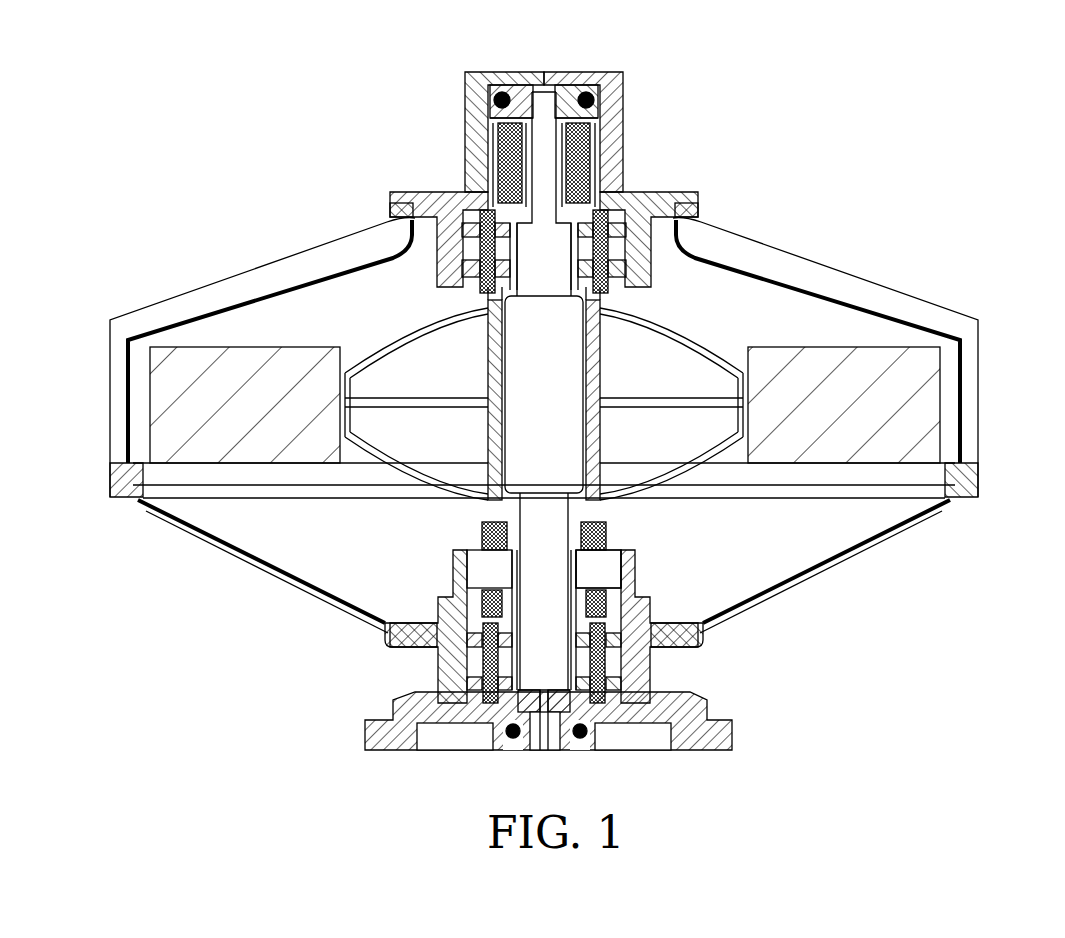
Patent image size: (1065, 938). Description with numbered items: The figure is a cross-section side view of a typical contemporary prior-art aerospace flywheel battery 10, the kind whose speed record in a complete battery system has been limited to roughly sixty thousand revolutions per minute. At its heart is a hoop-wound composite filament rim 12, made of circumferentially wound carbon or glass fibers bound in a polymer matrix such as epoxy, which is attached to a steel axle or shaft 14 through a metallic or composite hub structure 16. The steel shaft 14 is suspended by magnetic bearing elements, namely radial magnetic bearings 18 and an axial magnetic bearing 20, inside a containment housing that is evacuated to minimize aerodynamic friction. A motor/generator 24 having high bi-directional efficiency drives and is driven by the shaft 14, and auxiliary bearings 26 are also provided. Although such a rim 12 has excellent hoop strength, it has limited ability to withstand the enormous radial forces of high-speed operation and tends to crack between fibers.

The aerospace flywheel battery 10 is at (840, 110).
The composite filament rim 12 is at (862, 342).
The shaft 14 is at (533, 450).
The hub structure 16 is at (690, 325).
The radial magnetic bearings 18 is at (462, 192).
The axial magnetic bearing 20 is at (465, 120).
The motor/generator 24 is at (605, 577).
The auxiliary bearings 26 is at (600, 752).